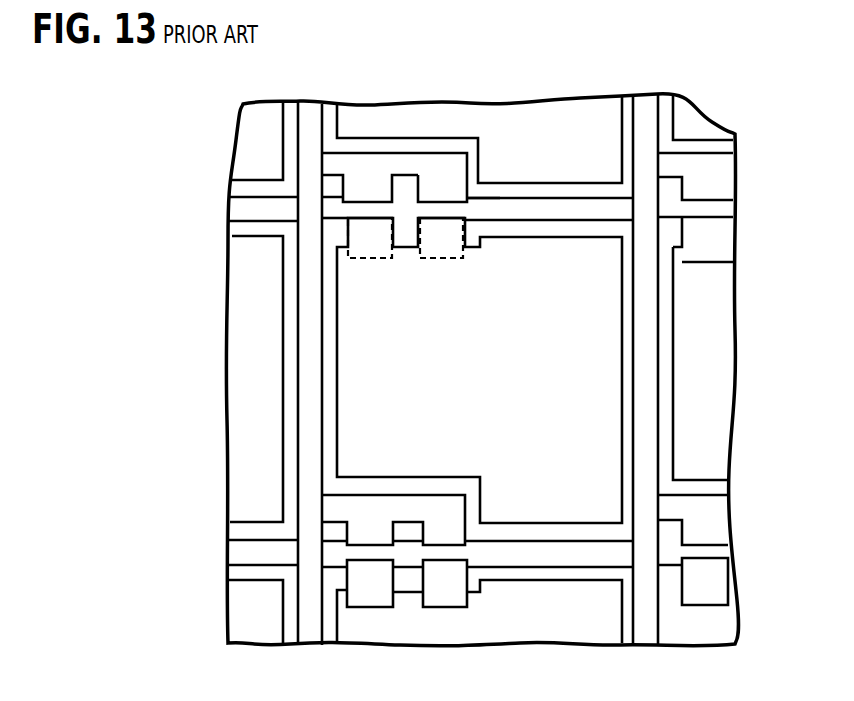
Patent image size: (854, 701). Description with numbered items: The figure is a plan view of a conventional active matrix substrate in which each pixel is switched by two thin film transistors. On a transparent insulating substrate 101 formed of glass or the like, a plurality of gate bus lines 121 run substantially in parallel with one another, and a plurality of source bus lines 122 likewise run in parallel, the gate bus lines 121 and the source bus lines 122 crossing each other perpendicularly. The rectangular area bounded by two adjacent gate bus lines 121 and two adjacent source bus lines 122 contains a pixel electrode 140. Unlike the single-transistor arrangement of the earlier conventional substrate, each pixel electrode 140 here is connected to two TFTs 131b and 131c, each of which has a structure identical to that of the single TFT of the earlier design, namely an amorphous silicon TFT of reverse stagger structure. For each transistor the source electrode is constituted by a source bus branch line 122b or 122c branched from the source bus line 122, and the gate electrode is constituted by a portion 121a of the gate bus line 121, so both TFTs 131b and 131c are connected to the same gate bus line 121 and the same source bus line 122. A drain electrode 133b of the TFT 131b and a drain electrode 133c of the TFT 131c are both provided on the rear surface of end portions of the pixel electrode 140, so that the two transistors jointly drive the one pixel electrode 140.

The transparent insulating substrate 101 is at (712, 487).
The gate bus line 121 is at (557, 557).
The portion of the gate bus line 121a is at (465, 210).
The source bus line 122 is at (652, 113).
The source bus branch line 122b is at (372, 185).
The source bus branch line 122c is at (440, 168).
The TFT 131b is at (364, 209).
The TFT 131c is at (443, 208).
The drain electrode 133b is at (373, 258).
The drain electrode 133c is at (467, 256).
The pixel electrode 140 is at (543, 400).